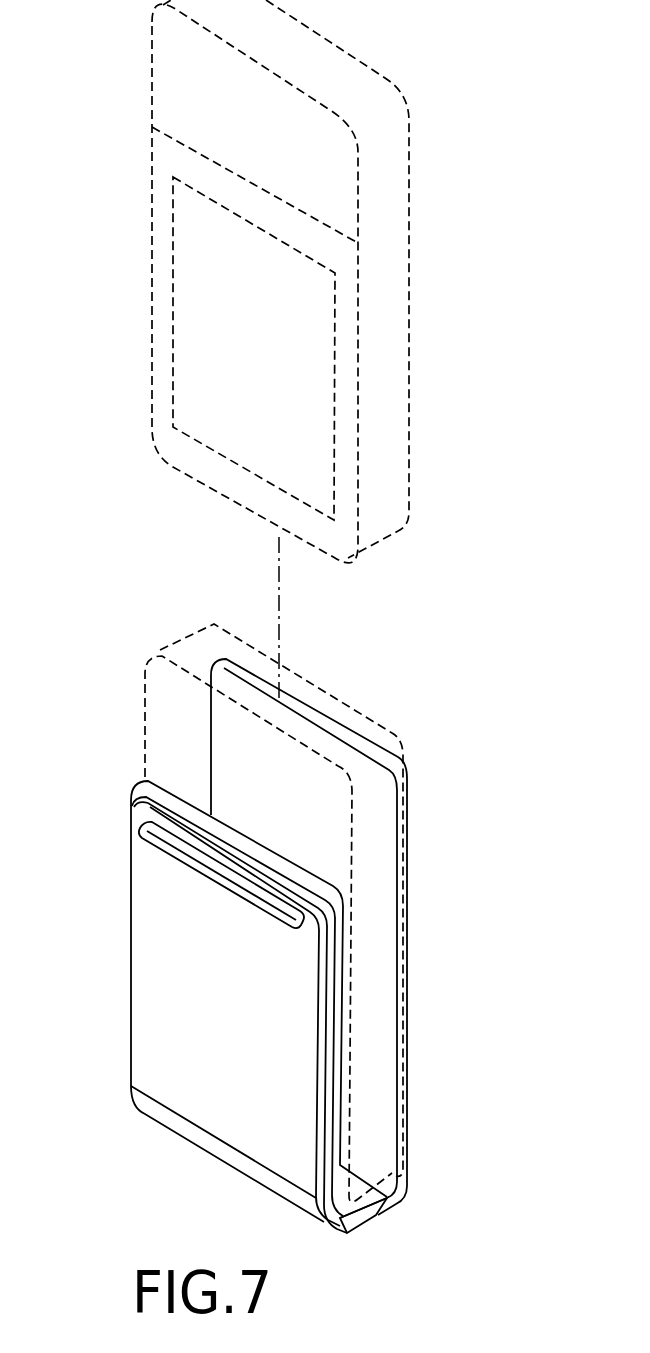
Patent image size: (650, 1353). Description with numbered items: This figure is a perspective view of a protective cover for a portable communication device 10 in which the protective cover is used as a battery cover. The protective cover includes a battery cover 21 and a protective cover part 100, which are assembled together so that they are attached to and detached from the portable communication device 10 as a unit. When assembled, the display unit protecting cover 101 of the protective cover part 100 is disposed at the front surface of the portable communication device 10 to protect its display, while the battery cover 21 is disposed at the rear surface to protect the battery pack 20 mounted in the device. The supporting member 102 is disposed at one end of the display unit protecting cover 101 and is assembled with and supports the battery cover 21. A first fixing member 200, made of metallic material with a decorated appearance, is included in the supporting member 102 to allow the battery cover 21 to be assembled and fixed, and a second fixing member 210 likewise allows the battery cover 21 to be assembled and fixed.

The portable communication device 10 is at (418, 88).
The battery pack 20 is at (190, 318).
The battery cover 21 is at (142, 792).
The protective cover part 100 is at (301, 986).
The display unit protecting cover 101 is at (407, 848).
The supporting member 102 is at (268, 991).
The first fixing member 200 is at (158, 840).
The second fixing member 210 is at (363, 1222).